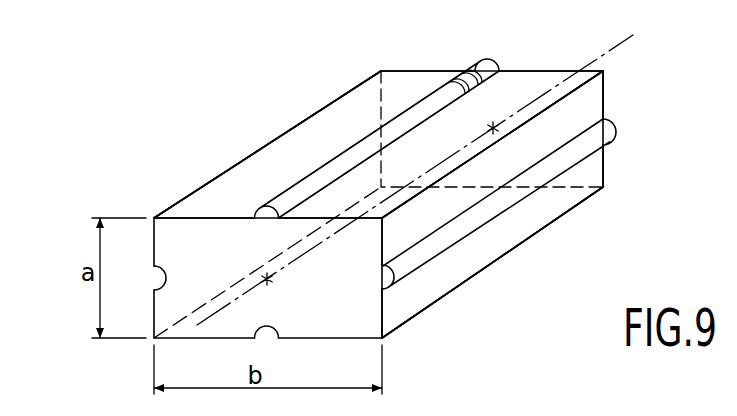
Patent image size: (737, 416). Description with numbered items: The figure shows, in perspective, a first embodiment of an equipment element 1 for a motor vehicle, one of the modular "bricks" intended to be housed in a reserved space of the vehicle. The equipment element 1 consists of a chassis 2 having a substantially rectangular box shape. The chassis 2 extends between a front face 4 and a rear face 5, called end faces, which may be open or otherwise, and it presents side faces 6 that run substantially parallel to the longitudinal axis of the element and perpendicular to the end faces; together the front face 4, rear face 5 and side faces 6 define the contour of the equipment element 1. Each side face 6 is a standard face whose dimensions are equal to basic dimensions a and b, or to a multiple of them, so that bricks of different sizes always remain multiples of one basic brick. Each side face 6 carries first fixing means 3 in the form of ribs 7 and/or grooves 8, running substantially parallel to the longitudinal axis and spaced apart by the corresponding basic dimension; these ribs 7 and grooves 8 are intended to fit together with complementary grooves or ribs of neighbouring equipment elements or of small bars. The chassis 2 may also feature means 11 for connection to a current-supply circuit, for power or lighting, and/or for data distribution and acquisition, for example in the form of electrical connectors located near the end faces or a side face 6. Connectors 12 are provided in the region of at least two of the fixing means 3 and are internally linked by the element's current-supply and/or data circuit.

The equipment element 1 is at (398, 188).
The chassis 2 is at (535, 83).
The first fixing means 3 is at (620, 110).
The front face 4 is at (180, 297).
The rear face 5 is at (407, 97).
The side face 6 is at (303, 167).
The rib 7 is at (430, 248).
The groove 8 is at (148, 275).
The connection means 11 is at (483, 69).
The connectors 12 is at (443, 72).